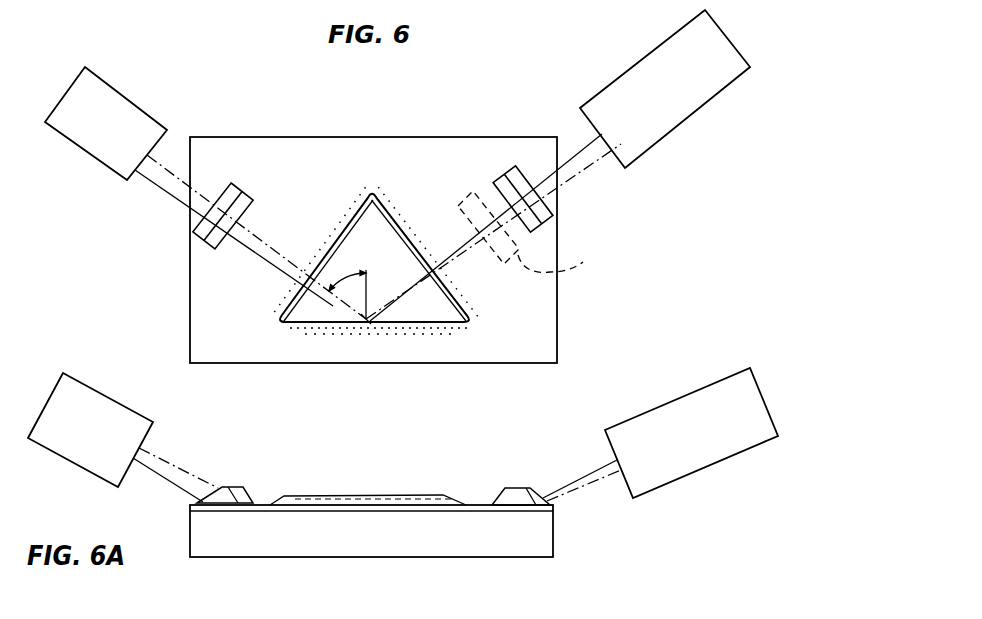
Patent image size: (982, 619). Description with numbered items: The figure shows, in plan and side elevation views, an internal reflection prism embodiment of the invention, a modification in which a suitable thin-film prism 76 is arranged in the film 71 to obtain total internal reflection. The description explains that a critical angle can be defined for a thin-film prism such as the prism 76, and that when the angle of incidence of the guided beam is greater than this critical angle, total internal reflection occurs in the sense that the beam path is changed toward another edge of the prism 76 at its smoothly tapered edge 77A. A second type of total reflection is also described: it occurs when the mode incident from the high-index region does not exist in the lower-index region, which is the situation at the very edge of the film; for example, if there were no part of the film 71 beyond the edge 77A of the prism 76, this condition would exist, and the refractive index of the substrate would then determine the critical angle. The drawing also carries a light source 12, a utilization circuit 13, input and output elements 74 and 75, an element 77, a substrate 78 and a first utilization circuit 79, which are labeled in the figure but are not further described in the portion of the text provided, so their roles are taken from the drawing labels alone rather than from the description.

In FIG. 6, the light source 12 is at (123, 93).
In FIG. 6A, the light source 12 is at (107, 398).
In FIG. 6, the utilization circuit 13 is at (637, 62).
In FIG. 6A, the utilization circuit 13 is at (673, 399).
In FIG. 6, the film 71 is at (198, 271).
In FIG. 6, the input coupler (grating / prism) 74 is at (206, 225).
In FIG. 6A, the input coupler (grating / prism) 74 is at (235, 487).
In FIG. 6, the output coupler (grating / prism) 75 is at (541, 209).
In FIG. 6A, the output coupler (grating / prism) 75 is at (517, 488).
In FIG. 6, the thin-film prism 76 is at (361, 286).
In FIG. 6A, the thin-film prism 76 is at (380, 493).
In FIG. 6, the triangular film boundary 77 is at (404, 202).
In FIG. 6, the smoothly tapered edge 77A is at (378, 337).
In FIG. 6A, the substrate 78 is at (378, 545).
In FIG. 6, the first utilization circuit 79 is at (614, 248).